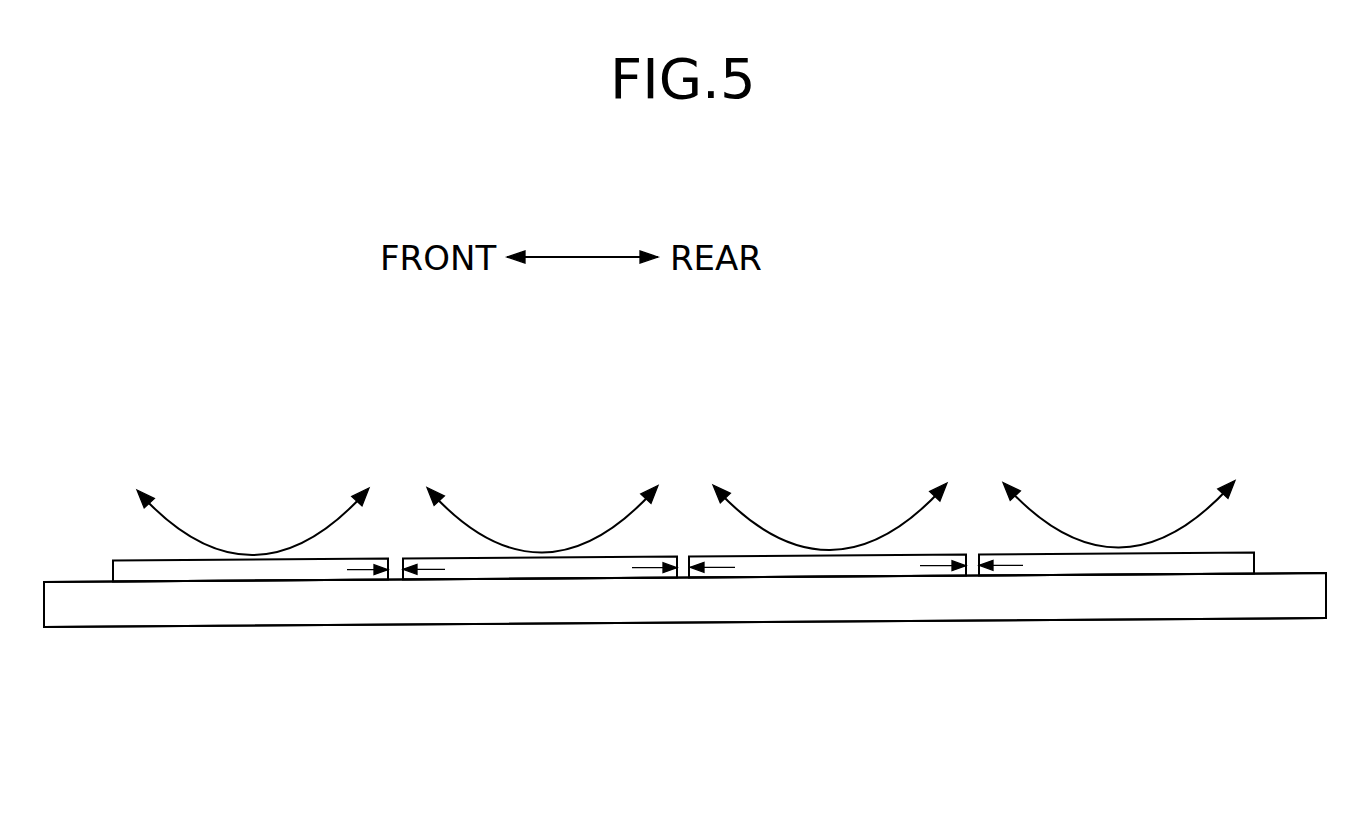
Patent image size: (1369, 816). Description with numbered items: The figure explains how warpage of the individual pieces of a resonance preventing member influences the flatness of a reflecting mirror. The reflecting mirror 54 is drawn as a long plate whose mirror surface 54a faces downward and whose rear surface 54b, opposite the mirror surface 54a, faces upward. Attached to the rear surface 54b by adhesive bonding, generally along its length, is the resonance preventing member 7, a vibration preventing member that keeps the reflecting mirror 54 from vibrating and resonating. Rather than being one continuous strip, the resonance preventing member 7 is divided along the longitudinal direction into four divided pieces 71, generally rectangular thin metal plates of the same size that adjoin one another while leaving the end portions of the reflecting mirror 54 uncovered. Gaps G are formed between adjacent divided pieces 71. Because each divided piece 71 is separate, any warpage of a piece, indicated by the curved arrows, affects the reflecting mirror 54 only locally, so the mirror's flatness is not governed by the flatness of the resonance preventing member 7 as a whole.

The resonance preventing member 7 is at (116, 548).
The divided pieces 71 is at (368, 558).
The gaps G is at (432, 572).
The reflecting mirror 54 is at (87, 640).
The mirror surface 54a is at (1273, 620).
The rear surface 54b is at (1290, 570).